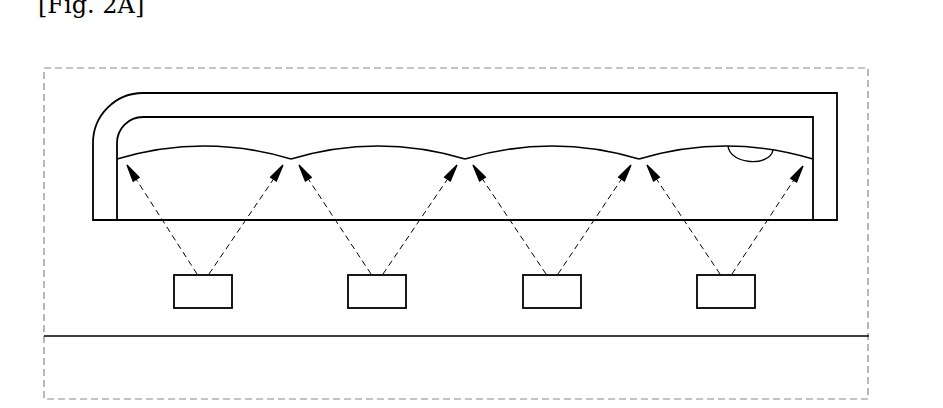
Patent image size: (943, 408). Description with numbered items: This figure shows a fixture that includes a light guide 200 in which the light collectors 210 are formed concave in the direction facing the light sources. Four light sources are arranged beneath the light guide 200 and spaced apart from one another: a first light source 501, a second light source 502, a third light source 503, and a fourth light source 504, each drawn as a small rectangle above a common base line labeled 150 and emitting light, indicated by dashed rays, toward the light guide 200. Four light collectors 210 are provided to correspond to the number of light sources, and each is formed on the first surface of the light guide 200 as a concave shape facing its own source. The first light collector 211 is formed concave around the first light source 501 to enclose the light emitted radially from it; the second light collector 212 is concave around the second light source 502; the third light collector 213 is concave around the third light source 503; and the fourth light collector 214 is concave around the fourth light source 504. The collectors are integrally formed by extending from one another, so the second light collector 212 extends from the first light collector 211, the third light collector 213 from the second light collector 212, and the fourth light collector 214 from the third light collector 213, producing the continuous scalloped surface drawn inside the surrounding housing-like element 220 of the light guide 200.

The substrate 150 is at (98, 325).
The light guide 200 is at (465, 115).
The light collector 210 is at (773, 150).
The first light collector 211 is at (203, 147).
The second light collector 212 is at (377, 146).
The third light collector 213 is at (552, 146).
The fourth light collector 214 is at (782, 152).
The cover housing 220 is at (552, 117).
The first light source 501 is at (202, 300).
The second light source 502 is at (376, 300).
The third light source 503 is at (551, 300).
The fourth light source 504 is at (725, 300).